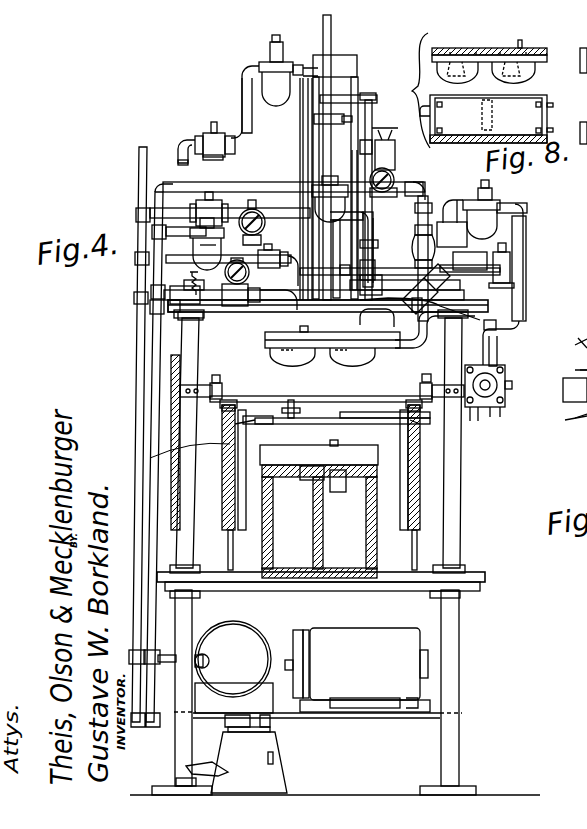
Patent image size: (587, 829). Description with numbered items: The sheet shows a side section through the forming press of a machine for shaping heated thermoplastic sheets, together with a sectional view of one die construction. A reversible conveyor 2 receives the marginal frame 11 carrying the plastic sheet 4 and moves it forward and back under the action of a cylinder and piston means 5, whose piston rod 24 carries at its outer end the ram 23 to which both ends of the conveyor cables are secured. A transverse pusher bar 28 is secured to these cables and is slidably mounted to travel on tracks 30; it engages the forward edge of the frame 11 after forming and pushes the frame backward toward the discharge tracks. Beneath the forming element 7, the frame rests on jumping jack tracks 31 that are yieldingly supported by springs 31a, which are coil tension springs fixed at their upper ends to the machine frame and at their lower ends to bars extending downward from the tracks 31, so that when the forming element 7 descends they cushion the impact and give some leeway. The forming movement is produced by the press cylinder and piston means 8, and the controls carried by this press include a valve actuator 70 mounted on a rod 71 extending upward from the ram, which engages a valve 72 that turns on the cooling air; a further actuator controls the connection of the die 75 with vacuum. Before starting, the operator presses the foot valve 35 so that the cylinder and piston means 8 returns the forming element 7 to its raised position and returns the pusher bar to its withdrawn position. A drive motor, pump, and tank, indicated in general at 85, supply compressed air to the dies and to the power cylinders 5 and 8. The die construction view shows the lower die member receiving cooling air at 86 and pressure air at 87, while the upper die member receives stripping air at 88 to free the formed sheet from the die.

In FIG. 4, the reversible conveyor 2 is at (220, 376).
In FIG. 4, the plastic sheet 4 is at (378, 412).
In FIG. 4, the cylinder and piston means 5 is at (504, 372).
In FIG. 4, the forming element 7 is at (257, 340).
In FIG. 8, the forming element 7 is at (504, 48).
In FIG. 4, the cylinder and piston means 8 is at (304, 153).
In FIG. 4, the frame 11 is at (252, 424).
In FIG. 4, the ram 23 is at (567, 379).
In FIG. 4, the piston rod 24 is at (572, 362).
In FIG. 4, the pusher bar 28 is at (288, 396).
In FIG. 4, the tracks 30 is at (224, 390).
In FIG. 4, the jumping jack tracks 31 is at (238, 440).
In FIG. 4, the springs 31a is at (150, 452).
In FIG. 4, the foot valve 35 is at (184, 766).
In FIG. 4, the valve actuator 70 is at (334, 116).
In FIG. 4, the rod 71 is at (326, 42).
In FIG. 4, the valve 72 is at (350, 258).
In FIG. 8, the die 75 is at (492, 48).
In FIG. 4, the drive motor, pump, and tank 85 is at (324, 624).
In FIG. 8, the cooling air supply 86 is at (552, 130).
In FIG. 8, the pressure air supply 87 is at (438, 118).
In FIG. 8, the stripping air supply 88 is at (522, 43).